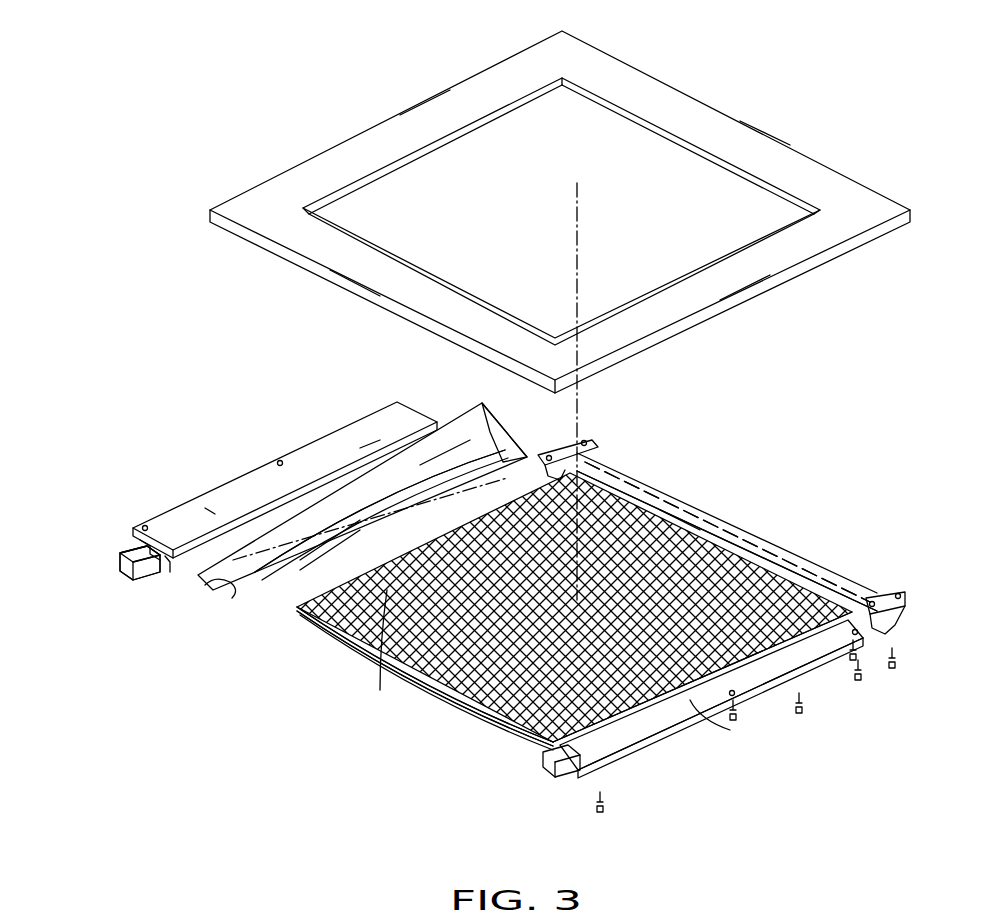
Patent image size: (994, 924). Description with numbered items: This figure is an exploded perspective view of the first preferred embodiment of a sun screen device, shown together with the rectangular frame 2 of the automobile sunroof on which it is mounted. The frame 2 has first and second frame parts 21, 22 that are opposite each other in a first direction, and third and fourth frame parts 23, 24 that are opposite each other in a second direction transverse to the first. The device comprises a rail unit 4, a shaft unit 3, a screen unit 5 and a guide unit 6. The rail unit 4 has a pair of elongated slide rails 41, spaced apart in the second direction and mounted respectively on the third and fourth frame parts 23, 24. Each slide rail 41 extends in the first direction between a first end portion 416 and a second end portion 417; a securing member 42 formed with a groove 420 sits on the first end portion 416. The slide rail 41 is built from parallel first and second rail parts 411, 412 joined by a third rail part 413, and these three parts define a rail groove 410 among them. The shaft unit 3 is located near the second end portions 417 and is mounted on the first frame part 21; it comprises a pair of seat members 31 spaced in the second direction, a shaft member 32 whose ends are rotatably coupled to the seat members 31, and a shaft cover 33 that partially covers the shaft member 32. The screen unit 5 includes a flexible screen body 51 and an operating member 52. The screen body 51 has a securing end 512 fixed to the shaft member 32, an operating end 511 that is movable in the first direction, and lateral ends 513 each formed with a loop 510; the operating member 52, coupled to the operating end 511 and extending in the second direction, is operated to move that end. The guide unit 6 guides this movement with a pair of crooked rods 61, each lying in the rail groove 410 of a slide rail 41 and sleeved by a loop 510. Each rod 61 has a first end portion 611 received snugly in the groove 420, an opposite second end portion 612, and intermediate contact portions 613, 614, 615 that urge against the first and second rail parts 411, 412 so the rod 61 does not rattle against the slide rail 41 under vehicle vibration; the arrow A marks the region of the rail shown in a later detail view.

The rectangular frame 2 is at (690, 92).
The first frame part 21 is at (740, 130).
The second frame part 22 is at (355, 268).
The third frame part 23 is at (425, 108).
The fourth frame part 24 is at (745, 285).
The shaft unit 3 is at (765, 530).
The seat member 31 is at (598, 452).
The shaft member 32 is at (720, 522).
The shaft cover 33 is at (790, 560).
The rail unit 4 is at (130, 468).
The slide rail 41 is at (250, 462).
The rail groove 410 is at (235, 512).
The first rail part 411 is at (210, 520).
The second rail part 412 is at (170, 572).
The third rail part 413 is at (140, 546).
The first end portion 416 is at (152, 526).
The second end portion 417 is at (370, 455).
The securing member 42 is at (130, 572).
The groove 420 is at (115, 560).
The screen unit 5 is at (487, 722).
The screen body 51 is at (537, 673).
The operating member 52 is at (450, 693).
The loop 510 is at (293, 610).
The operating end 511 is at (418, 663).
The securing end 512 is at (660, 512).
The lateral end 513 is at (387, 688).
The guide unit 6 is at (362, 486).
The crooked rod 61 is at (278, 566).
The first end portion 611 is at (236, 588).
The second end portion 612 is at (485, 458).
The contact portion 613 is at (318, 540).
The contact portion 614 is at (304, 560).
The contact portion 615 is at (400, 480).
The viewing direction A is at (808, 742).